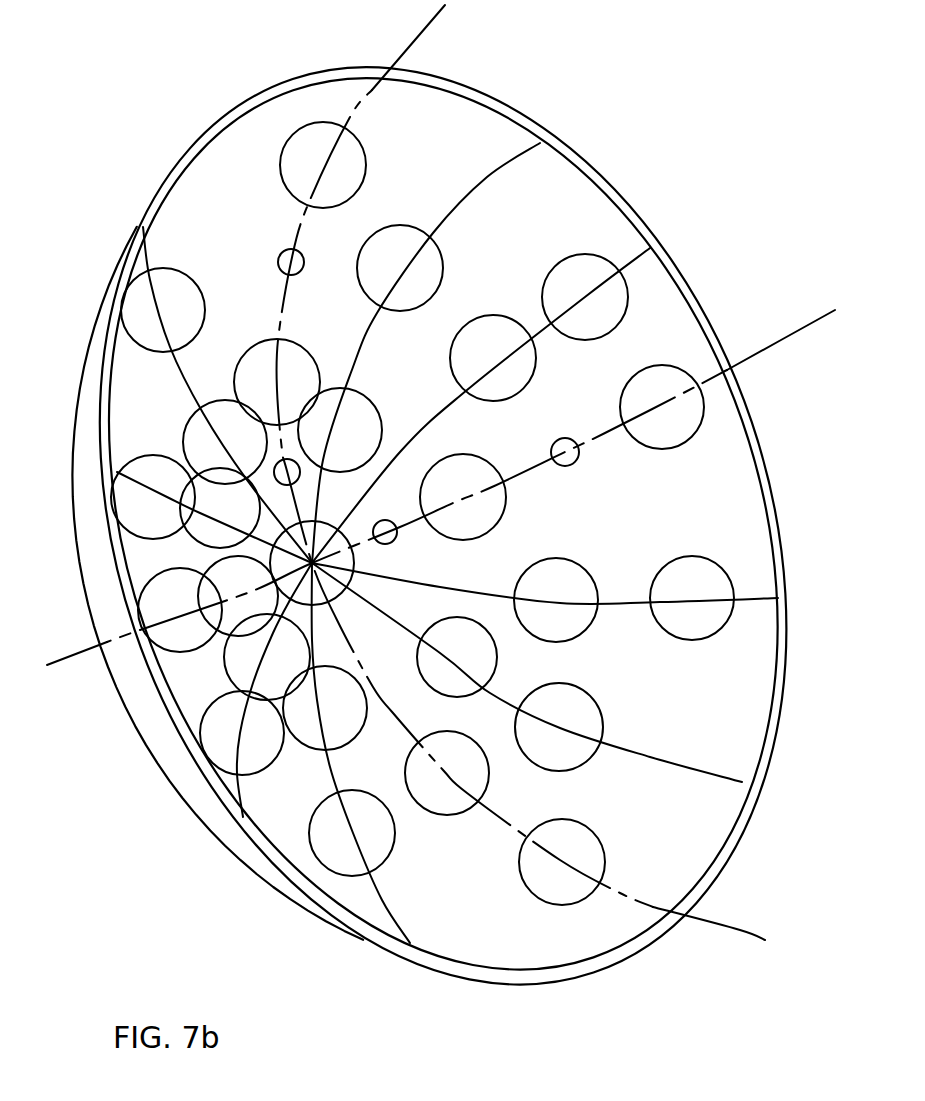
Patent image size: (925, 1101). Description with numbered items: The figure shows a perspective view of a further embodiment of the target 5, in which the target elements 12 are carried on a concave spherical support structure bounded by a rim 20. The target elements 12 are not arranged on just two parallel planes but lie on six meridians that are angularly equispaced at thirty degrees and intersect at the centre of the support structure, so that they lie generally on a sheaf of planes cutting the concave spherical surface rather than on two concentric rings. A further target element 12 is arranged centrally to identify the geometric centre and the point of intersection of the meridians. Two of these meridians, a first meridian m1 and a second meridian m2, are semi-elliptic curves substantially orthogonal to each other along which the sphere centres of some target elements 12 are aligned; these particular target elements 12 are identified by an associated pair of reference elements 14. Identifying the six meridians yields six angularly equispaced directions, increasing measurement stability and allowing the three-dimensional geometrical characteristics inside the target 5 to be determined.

The target 5 is at (451, 538).
The rim of dish 20 is at (217, 130).
The target elements 12 is at (662, 365).
The reference elements 14 is at (281, 262).
The first meridian m1 is at (410, 47).
The second meridian m2 is at (67, 657).